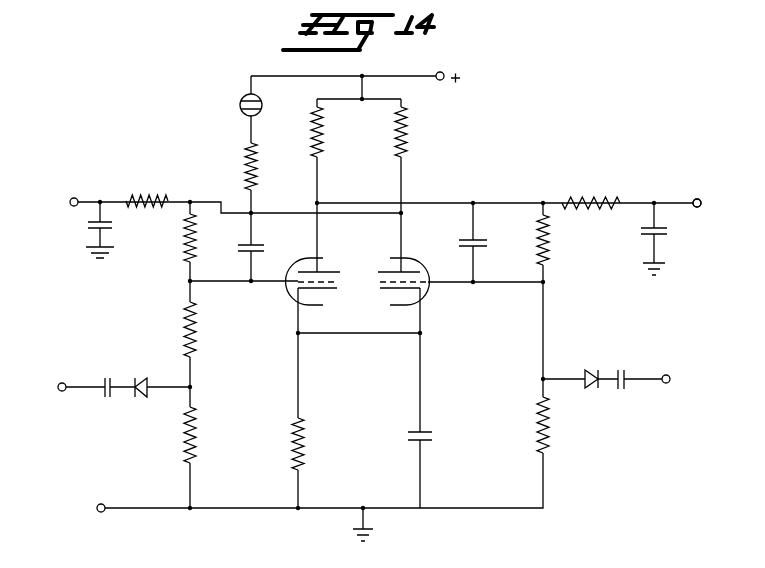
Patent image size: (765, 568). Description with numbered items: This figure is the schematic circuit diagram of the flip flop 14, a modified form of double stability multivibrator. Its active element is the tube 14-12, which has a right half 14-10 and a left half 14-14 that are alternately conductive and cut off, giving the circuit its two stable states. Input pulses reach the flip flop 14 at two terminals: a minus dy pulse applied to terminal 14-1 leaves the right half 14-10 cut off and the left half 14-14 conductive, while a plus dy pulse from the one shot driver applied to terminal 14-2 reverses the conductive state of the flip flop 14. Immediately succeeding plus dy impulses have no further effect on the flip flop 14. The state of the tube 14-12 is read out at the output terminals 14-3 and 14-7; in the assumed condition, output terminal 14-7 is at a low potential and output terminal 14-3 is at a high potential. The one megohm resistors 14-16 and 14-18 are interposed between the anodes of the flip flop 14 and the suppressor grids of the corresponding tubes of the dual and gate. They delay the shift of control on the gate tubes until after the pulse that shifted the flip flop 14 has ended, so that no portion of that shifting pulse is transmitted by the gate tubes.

The flip flop 14 is at (425, 127).
The terminal 14-1 is at (666, 383).
The terminal 14-2 is at (62, 391).
The output terminal 14-3 is at (72, 208).
The output terminal 14-7 is at (697, 199).
The right half of tube 14-10 is at (355, 268).
The tube 14-12 is at (413, 259).
The left half of tube 14-14 is at (290, 298).
The one megohm resistor 14-16 is at (148, 199).
The one megohm resistor 14-18 is at (600, 200).